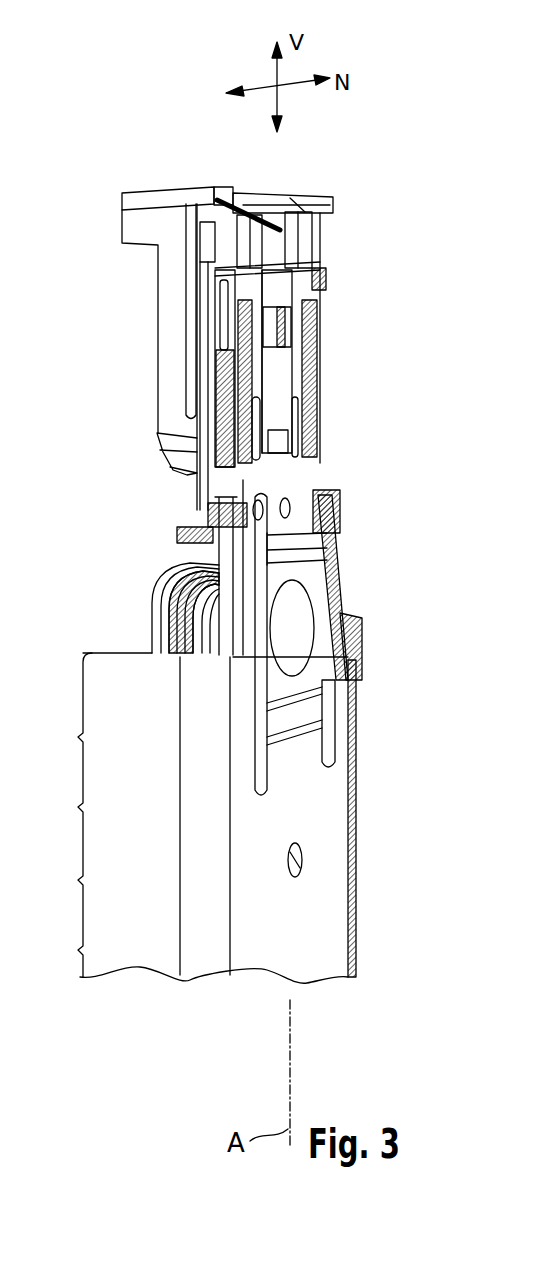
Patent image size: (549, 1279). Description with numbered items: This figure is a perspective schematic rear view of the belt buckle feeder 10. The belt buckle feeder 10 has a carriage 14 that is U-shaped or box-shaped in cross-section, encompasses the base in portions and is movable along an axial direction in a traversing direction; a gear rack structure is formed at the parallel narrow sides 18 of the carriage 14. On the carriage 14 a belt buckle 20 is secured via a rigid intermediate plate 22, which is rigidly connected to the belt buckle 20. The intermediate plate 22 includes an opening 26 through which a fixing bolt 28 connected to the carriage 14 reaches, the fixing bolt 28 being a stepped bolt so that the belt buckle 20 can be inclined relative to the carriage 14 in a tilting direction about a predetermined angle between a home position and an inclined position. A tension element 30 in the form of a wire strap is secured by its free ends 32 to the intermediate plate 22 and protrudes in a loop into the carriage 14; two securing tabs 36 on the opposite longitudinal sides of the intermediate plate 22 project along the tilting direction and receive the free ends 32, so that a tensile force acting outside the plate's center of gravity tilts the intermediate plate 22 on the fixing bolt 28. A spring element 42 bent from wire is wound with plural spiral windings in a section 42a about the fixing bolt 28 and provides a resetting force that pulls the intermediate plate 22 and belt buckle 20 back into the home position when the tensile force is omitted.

The belt buckle feeder 10 is at (155, 148).
The carriage 14 is at (100, 1010).
The parallel narrow sides 18 is at (95, 704).
The belt buckle 20 is at (162, 343).
The intermediate plate 22 is at (330, 543).
The opening 26 is at (342, 648).
The fixing bolt 28 is at (150, 627).
The tension element 30 is at (320, 660).
The free ends 32 is at (343, 524).
The securing tabs 36 is at (318, 492).
The spring element 42 is at (145, 590).
The section 42a is at (207, 567).